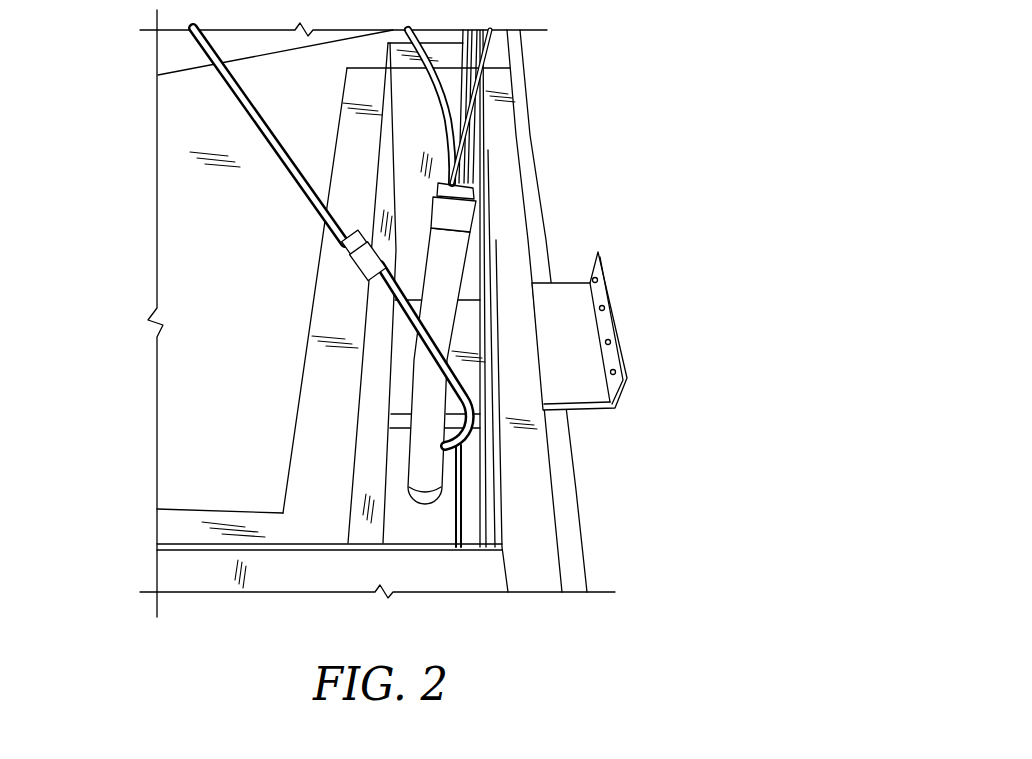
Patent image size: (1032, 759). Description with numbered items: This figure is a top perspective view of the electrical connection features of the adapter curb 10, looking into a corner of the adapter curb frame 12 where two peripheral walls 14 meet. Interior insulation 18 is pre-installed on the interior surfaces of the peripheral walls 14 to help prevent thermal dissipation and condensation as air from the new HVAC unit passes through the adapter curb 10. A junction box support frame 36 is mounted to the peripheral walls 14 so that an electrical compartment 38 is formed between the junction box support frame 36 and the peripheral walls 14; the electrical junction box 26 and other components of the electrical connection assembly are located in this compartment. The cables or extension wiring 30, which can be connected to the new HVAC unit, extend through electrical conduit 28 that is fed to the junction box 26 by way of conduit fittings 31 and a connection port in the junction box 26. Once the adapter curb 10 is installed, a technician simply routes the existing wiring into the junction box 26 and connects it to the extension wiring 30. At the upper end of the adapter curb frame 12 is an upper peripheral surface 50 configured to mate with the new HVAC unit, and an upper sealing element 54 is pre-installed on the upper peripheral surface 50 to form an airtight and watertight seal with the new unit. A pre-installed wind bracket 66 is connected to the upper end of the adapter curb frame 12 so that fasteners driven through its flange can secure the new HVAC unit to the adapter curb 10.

The adapter curb 10 is at (653, 66).
The adapter curb frame 12 is at (512, 68).
The peripheral walls 14 is at (482, 167).
The interior insulation 18 is at (170, 158).
The electrical junction box 26 is at (403, 488).
The conduit 28 is at (448, 248).
The extension wiring 30 is at (468, 125).
The conduit fittings 31 is at (423, 504).
The junction box support frame 36 is at (362, 393).
The electrical compartment 38 is at (466, 498).
The upper peripheral surface 50 is at (565, 570).
The upper sealing element 54 is at (533, 578).
The wind bracket 66 is at (600, 282).